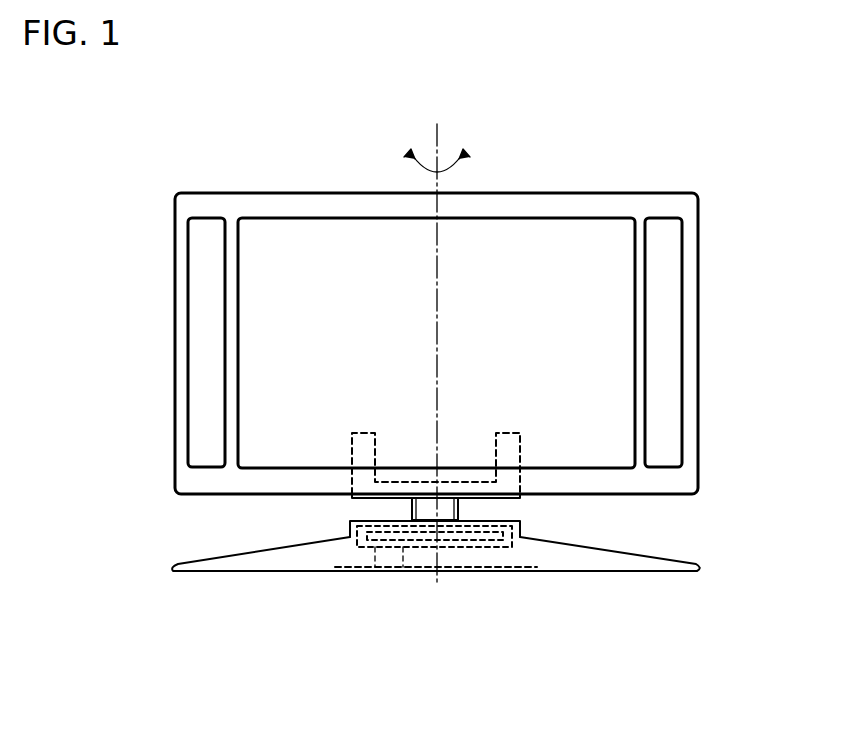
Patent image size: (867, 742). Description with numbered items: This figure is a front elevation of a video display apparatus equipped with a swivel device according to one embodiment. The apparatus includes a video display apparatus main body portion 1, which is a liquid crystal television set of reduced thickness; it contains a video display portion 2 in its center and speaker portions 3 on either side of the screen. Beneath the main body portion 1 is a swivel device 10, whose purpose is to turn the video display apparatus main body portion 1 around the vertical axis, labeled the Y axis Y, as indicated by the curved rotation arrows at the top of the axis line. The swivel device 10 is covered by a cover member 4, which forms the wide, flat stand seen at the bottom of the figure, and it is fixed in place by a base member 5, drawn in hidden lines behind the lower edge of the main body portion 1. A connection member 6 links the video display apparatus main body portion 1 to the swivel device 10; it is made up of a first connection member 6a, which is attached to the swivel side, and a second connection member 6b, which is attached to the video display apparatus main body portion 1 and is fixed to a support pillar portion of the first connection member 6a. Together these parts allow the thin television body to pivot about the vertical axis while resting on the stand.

The video display apparatus main body portion 1 is at (237, 195).
The video display portion 2 is at (565, 250).
The speaker portions 3 is at (203, 268).
The cover member 4 is at (266, 563).
The base member 5 is at (372, 578).
The connection member 6 is at (446, 653).
The first connection member 6a is at (403, 567).
The second connection member 6b is at (382, 498).
The swivel device 10 is at (481, 556).
The Y axis Y is at (438, 137).